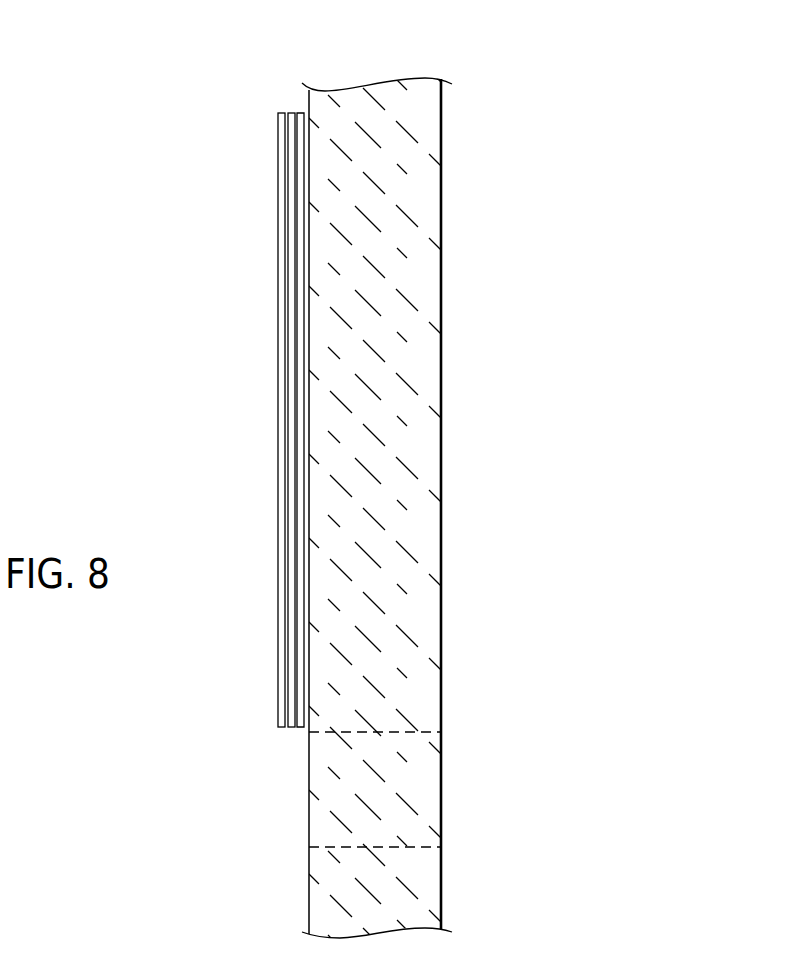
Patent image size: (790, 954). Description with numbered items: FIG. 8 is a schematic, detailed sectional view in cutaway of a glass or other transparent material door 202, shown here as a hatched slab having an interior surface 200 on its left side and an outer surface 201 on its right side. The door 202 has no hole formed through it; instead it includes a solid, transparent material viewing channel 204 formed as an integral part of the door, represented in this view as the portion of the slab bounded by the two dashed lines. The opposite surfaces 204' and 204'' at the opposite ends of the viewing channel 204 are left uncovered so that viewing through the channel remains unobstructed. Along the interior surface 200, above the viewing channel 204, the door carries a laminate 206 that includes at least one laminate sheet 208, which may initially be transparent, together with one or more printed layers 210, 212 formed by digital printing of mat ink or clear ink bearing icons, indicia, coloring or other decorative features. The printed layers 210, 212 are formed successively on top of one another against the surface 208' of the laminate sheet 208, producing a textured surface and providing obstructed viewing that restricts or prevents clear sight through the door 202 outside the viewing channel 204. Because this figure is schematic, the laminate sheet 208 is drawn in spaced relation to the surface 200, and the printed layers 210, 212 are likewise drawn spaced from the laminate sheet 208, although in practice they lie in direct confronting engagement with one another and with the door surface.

The interior surface 200 is at (307, 102).
The outer surface 201 is at (442, 123).
The door 202 is at (407, 362).
The viewing channel 204 is at (407, 822).
The surface of viewing channel 204' is at (225, 824).
The surface of viewing channel 204'' is at (556, 789).
The laminate 206 is at (258, 96).
The laminate sheet 208 is at (208, 480).
The surface of laminate sheet 208' is at (208, 143).
The printed layer 210 is at (291, 728).
The printed layer 212 is at (282, 728).